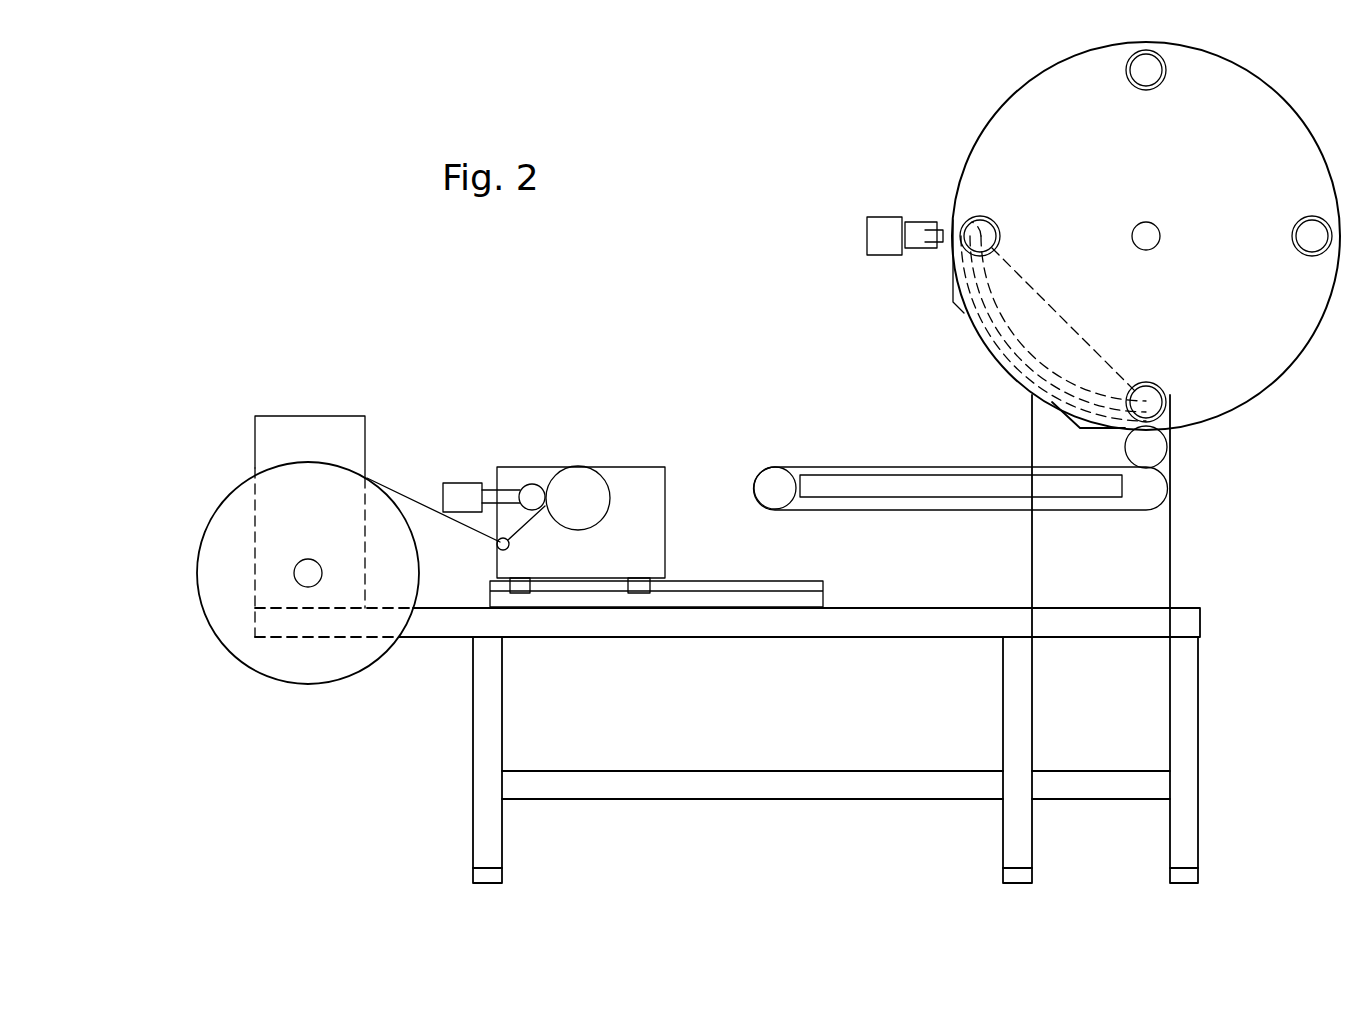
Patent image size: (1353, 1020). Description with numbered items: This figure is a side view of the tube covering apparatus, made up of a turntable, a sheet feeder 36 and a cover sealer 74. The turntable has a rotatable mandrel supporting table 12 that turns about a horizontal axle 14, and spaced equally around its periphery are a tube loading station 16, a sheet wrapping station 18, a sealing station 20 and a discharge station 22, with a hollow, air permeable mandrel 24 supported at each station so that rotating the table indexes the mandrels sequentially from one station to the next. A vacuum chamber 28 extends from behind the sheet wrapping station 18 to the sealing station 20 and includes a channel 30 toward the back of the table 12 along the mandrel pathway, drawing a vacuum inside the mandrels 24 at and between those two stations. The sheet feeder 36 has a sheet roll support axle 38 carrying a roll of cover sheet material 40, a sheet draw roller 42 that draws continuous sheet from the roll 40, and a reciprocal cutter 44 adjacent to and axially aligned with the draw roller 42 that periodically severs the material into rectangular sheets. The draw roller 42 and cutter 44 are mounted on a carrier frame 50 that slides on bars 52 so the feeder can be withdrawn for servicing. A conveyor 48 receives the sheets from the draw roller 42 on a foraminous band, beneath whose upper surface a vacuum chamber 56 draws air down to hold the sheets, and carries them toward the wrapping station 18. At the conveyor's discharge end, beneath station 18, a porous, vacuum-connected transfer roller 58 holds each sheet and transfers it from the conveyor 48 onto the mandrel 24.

The mandrel supporting table 12 is at (1236, 217).
The horizontal axle 14 is at (1141, 226).
The tube loading station 16 is at (1300, 270).
The sheet wrapping station 18 is at (1184, 395).
The sealing station 20 is at (980, 198).
The discharge station 22 is at (1187, 87).
The mandrel 24 is at (1142, 92).
The vacuum chamber 28 is at (952, 305).
The channel 30 is at (1005, 340).
The sheet feeder 36 is at (573, 443).
The sheet roll support axle 38 is at (313, 566).
The roll of cover sheet material 40 is at (226, 500).
The sheet draw roller 42 is at (588, 512).
The reciprocal cutter 44 is at (528, 492).
The conveyor 48 is at (960, 528).
The carrier frame 50 is at (650, 512).
The bars 52 is at (736, 590).
The vacuum chamber 56 is at (876, 477).
The transfer roller 58 is at (1128, 447).
The cover sealer 74 is at (892, 200).